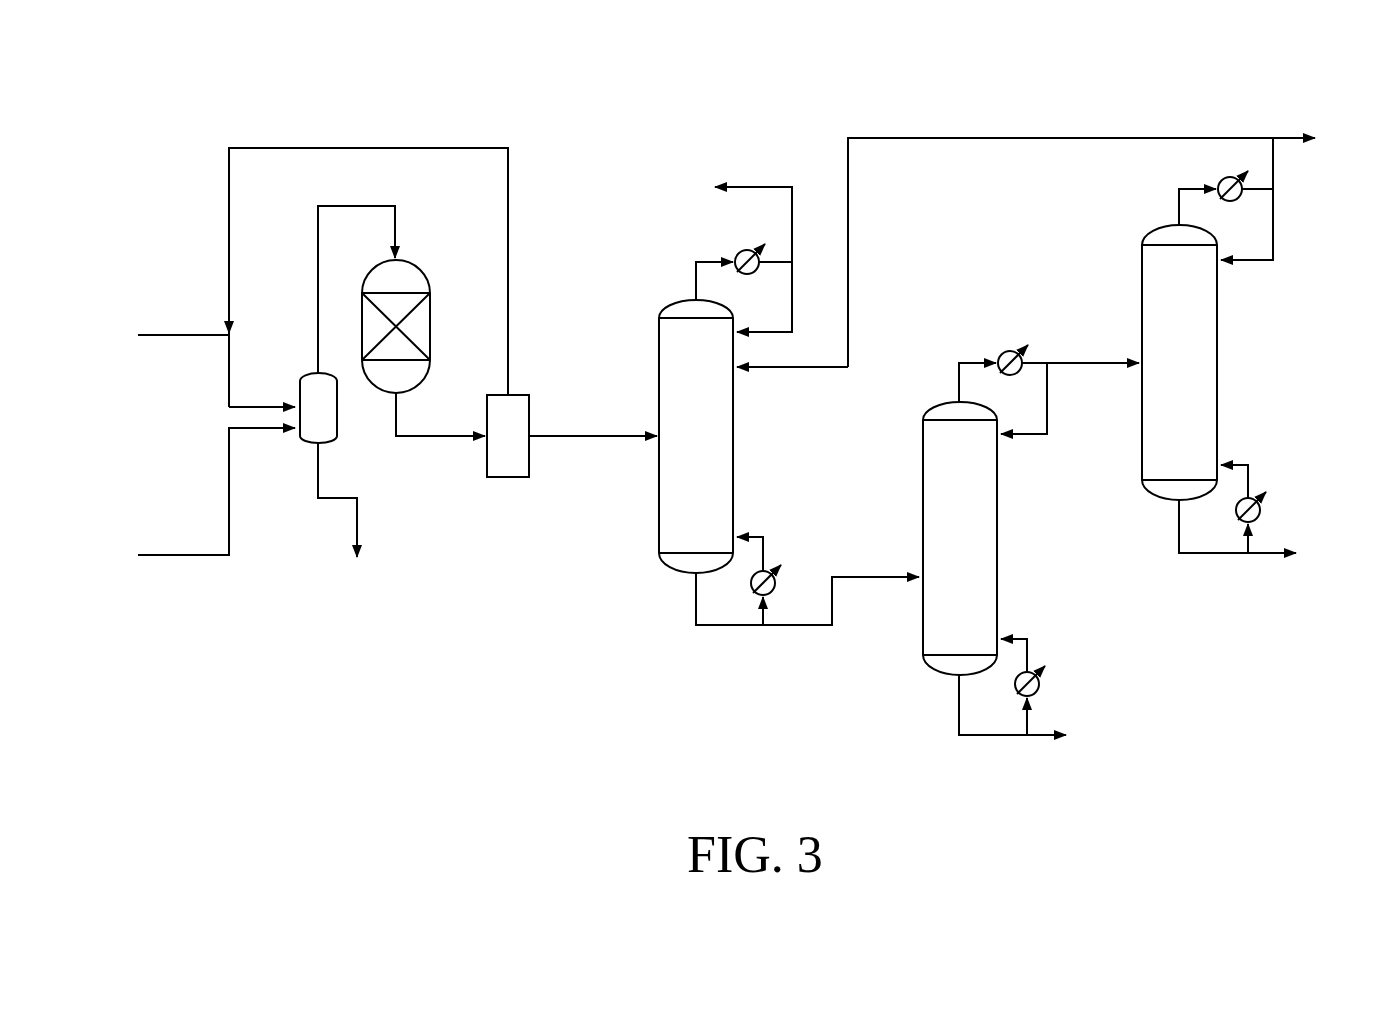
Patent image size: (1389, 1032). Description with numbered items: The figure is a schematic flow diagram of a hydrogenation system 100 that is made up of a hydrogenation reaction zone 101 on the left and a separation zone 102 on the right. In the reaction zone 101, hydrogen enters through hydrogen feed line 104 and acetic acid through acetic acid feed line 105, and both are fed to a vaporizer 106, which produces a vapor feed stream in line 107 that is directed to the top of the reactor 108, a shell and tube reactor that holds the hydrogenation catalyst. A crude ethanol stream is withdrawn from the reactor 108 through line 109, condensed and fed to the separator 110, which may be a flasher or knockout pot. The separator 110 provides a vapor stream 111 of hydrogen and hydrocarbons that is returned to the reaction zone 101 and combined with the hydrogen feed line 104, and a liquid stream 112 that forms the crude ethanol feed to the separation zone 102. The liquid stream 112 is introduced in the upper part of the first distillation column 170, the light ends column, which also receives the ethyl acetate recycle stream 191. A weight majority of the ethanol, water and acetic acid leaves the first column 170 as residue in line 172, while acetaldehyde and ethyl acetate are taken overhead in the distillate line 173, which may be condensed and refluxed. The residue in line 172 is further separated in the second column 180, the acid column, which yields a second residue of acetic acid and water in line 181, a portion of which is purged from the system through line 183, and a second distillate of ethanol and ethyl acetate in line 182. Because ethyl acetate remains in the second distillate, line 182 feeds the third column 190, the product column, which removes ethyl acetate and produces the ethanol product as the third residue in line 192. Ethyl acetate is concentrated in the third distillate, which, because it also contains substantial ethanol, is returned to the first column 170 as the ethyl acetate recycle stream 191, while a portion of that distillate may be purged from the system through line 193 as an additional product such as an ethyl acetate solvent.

The hydrogenation system 100 is at (1212, 718).
The hydrogenation reaction zone 101 is at (291, 630).
The separation zone 102 is at (1012, 109).
The hydrogen feed line 104 is at (175, 337).
The acetic acid feed line 105 is at (173, 557).
The vaporizer 106 is at (311, 447).
The vapor feed stream line 107 is at (357, 204).
The reactor 108 is at (415, 264).
The crude ethanol stream line 109 is at (440, 438).
The separator 110 is at (508, 478).
The vapor stream 111 is at (508, 248).
The liquid stream 112 is at (553, 434).
The first distillation column 170 is at (718, 448).
The first residue line 172 is at (733, 628).
The first distillate line 173 is at (753, 186).
The second column 180 is at (975, 537).
The second residue line 181 is at (959, 700).
The second distillate line 182 is at (1043, 360).
The purge line 183 is at (1035, 738).
The third column 190 is at (1200, 356).
The ethyl acetate recycle stream 191 is at (990, 139).
The third residue line 192 is at (1218, 556).
The purge line 193 is at (1283, 137).